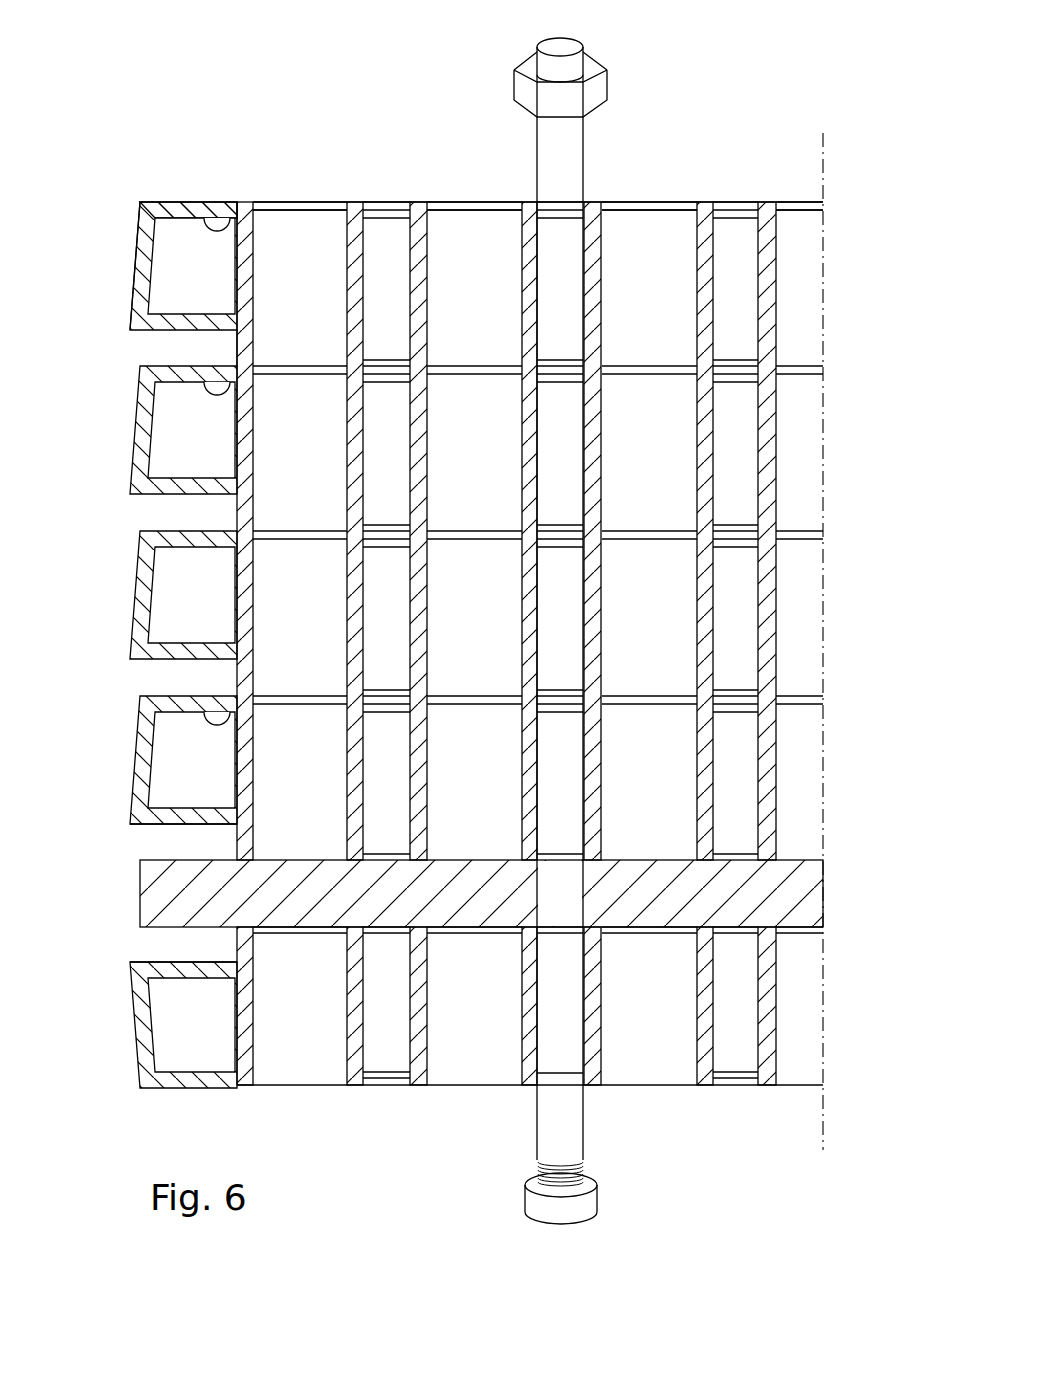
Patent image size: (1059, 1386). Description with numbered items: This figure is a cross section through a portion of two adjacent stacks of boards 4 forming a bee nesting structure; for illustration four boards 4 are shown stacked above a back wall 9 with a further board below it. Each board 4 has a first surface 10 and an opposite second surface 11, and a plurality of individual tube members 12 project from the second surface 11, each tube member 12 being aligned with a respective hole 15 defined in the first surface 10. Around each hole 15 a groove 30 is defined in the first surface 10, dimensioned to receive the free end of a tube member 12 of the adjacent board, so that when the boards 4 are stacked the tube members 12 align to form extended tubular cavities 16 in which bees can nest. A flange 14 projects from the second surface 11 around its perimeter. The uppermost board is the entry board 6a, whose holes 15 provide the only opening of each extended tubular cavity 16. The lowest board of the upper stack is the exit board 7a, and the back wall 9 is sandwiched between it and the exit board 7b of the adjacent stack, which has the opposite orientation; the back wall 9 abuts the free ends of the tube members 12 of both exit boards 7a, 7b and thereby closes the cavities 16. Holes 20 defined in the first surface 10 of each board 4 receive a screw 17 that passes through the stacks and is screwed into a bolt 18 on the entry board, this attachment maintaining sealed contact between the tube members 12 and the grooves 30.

The board 4 is at (146, 572).
The entry board 6a is at (155, 193).
The exit board 7a is at (237, 845).
The exit board 7b is at (237, 950).
The back wall 9 is at (160, 893).
The first surface 10 is at (200, 205).
The second surface 11 is at (232, 207).
The tube member 12 is at (237, 345).
The flange 14 is at (133, 288).
The hole 15 is at (318, 202).
The extended tubular cavity 16 is at (665, 278).
The screw 17 is at (562, 1122).
The bolt 18 is at (606, 88).
The hole 20 is at (388, 265).
The groove 30 is at (222, 385).